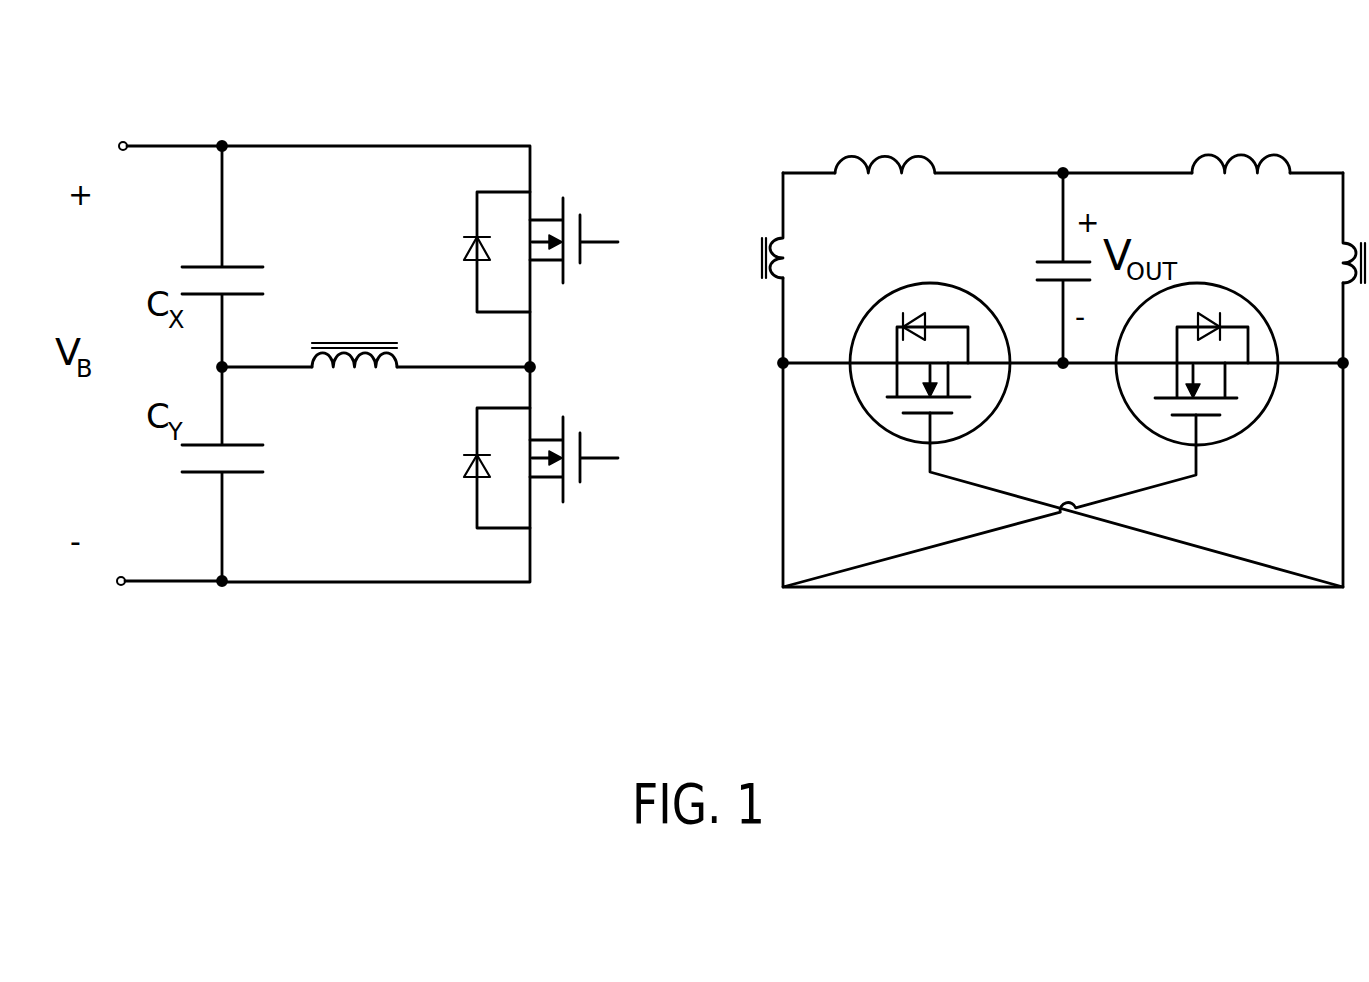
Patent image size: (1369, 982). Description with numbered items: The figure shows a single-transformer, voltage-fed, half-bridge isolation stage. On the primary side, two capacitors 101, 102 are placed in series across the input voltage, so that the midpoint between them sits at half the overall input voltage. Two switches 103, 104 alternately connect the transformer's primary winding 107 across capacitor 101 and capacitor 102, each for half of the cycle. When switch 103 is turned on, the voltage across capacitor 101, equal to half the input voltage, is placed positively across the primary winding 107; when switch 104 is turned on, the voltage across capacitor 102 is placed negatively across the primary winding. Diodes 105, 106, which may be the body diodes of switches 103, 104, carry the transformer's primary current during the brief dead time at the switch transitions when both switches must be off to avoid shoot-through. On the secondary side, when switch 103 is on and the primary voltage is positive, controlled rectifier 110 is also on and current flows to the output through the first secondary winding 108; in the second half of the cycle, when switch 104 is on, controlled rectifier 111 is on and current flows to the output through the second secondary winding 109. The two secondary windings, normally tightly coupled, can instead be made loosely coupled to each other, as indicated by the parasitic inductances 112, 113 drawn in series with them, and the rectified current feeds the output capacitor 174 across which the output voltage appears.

The capacitor 101 is at (196, 266).
The capacitor 102 is at (196, 473).
The switch 103 is at (581, 221).
The switch 104 is at (581, 441).
The diode 105 is at (463, 236).
The diode 106 is at (469, 477).
The primary winding 107 is at (352, 373).
The first secondary winding 108 is at (787, 259).
The second secondary winding 109 is at (1345, 263).
The controlled rectifier 110 is at (877, 431).
The controlled rectifier 111 is at (1233, 439).
The parasitic inductance 112 is at (930, 158).
The parasitic inductance 113 is at (1290, 163).
The output capacitor C_OUT 174 is at (1051, 283).